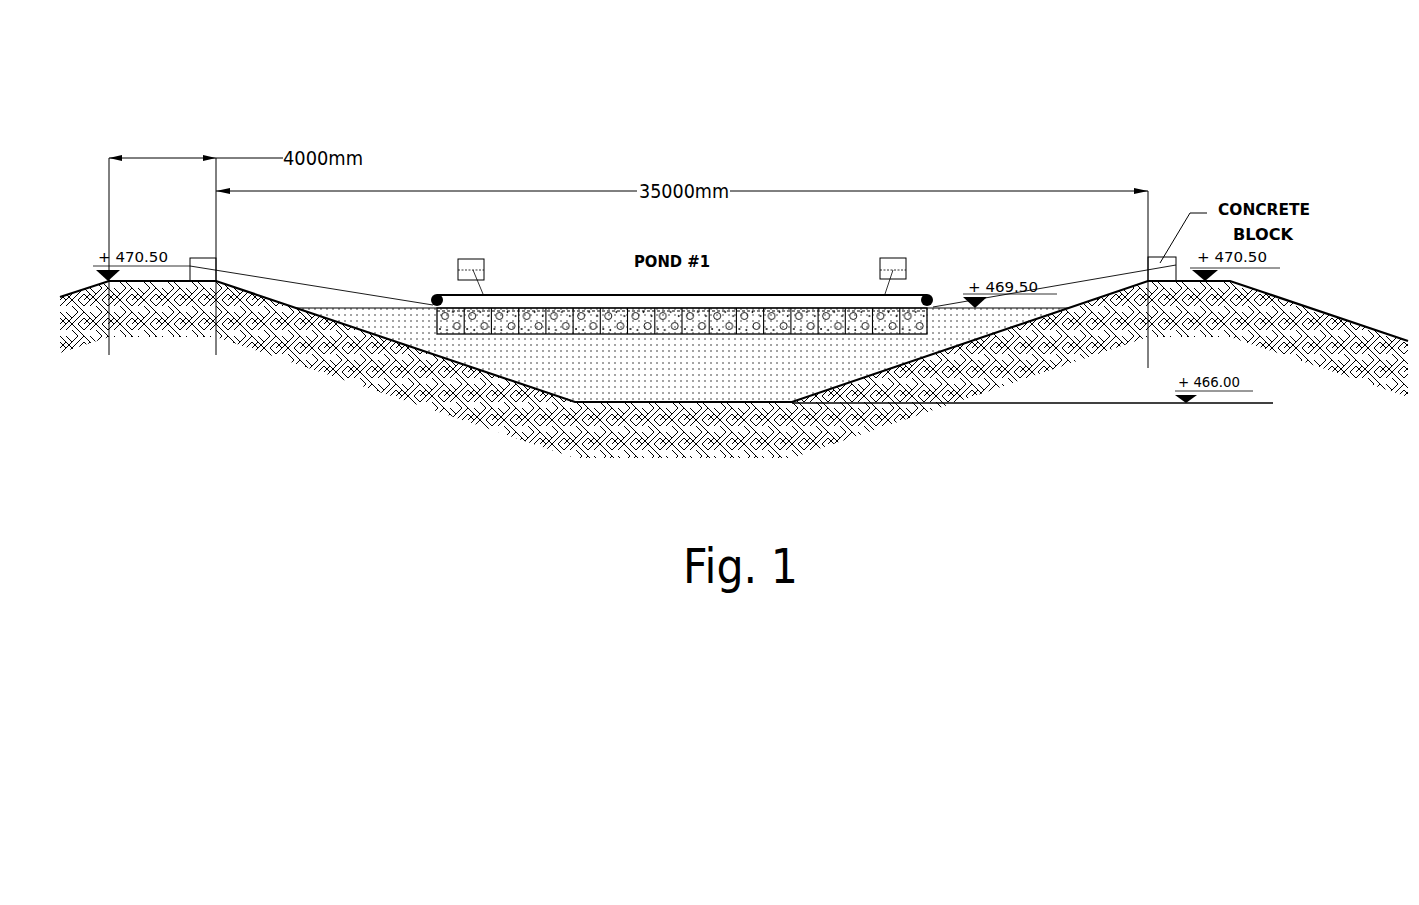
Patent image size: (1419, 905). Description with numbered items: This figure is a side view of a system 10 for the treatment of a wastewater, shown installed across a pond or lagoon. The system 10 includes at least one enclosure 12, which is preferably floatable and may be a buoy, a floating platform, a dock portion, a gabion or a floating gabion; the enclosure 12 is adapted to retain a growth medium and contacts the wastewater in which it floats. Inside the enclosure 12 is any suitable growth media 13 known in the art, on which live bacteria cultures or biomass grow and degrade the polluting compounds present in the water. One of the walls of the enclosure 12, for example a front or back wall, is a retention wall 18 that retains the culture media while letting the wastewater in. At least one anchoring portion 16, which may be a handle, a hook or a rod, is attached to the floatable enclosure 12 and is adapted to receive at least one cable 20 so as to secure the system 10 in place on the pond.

The system for the treatment of a wastewater 10 is at (835, 118).
The enclosure 12 is at (682, 263).
The growth media 13 is at (682, 289).
The anchoring portion 16 is at (200, 258).
The retention wall 18 is at (682, 264).
The cable 20 is at (303, 282).